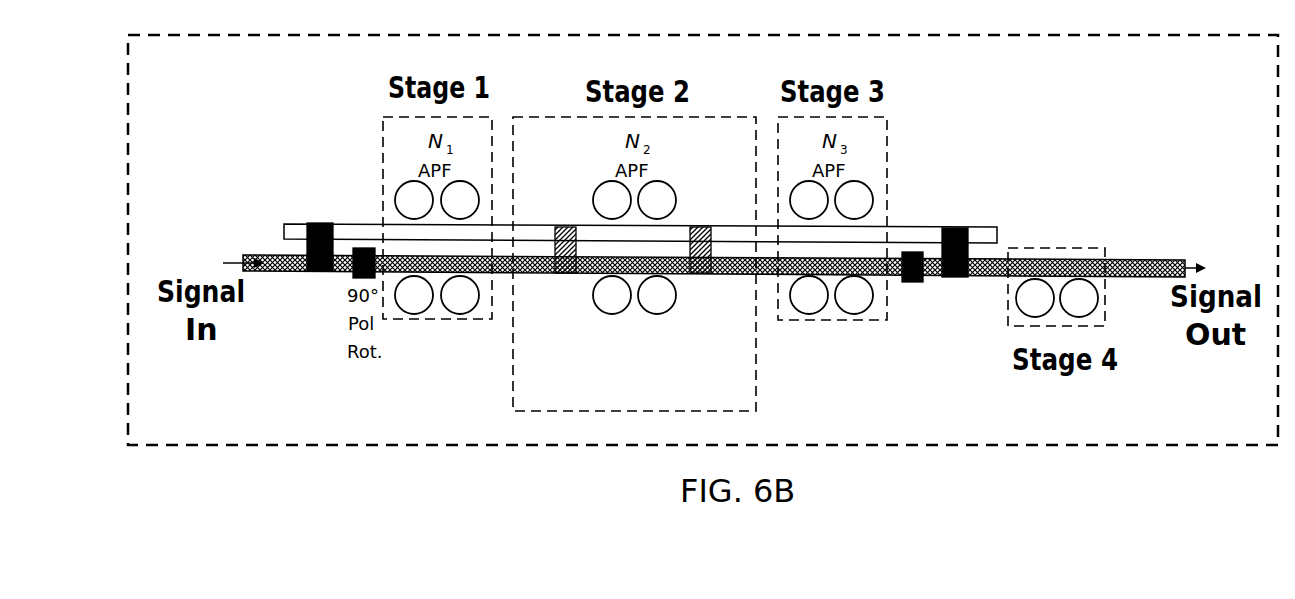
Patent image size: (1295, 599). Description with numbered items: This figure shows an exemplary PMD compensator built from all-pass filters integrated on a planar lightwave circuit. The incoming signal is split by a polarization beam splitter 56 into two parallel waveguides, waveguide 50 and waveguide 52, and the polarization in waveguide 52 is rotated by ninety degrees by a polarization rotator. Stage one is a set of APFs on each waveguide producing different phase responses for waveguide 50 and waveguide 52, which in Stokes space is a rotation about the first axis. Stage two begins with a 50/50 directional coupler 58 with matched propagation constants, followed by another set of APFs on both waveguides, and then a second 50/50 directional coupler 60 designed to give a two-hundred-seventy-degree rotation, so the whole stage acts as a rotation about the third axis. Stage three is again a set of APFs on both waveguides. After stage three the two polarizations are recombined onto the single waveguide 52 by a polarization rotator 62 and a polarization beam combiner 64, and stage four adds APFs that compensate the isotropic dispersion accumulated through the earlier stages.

The waveguide 50 is at (366, 216).
The waveguide 52 is at (283, 286).
The polarization beam splitter 56 is at (307, 270).
The 50/50 directional coupler 58 is at (559, 258).
The 50/50 directional coupler 60 is at (698, 244).
The polarization rotator 62 is at (907, 279).
The polarization beam combiner 64 is at (957, 268).